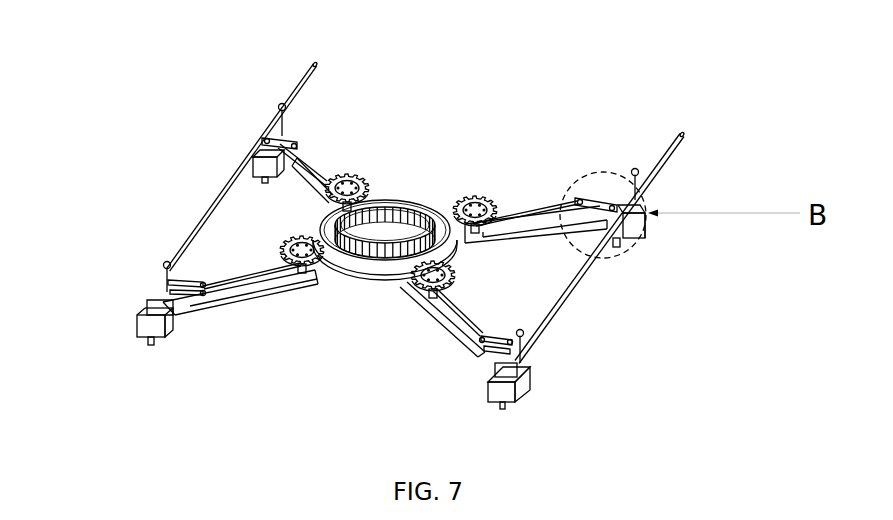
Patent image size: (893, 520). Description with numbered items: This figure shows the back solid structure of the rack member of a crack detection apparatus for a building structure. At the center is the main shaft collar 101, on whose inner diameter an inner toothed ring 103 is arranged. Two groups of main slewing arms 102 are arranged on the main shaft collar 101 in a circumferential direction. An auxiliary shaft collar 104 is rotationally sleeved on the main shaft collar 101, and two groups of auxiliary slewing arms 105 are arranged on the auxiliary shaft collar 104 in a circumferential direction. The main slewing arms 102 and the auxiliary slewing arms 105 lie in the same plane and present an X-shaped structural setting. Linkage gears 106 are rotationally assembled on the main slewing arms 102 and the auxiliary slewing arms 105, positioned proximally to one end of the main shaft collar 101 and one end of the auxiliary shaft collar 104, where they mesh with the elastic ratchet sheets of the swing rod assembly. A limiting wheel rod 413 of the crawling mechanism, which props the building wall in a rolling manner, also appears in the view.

The main shaft collar 101 is at (359, 137).
The main slewing arms 102 is at (303, 186).
The inner toothed ring 103 is at (367, 319).
The auxiliary shaft collar 104 is at (317, 228).
The auxiliary slewing arms 105 is at (391, 227).
The linkage gears 106 is at (444, 124).
The limiting wheel rod 413 is at (457, 190).